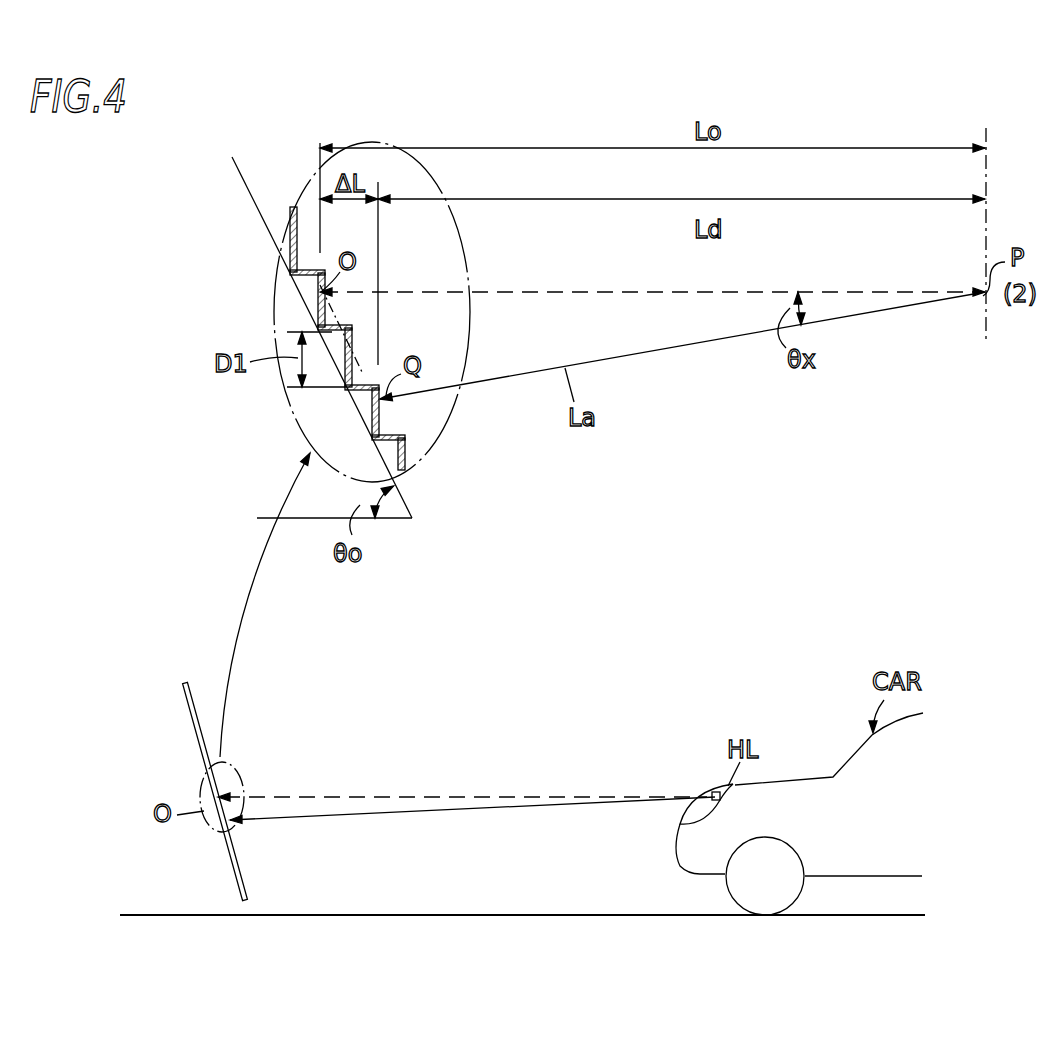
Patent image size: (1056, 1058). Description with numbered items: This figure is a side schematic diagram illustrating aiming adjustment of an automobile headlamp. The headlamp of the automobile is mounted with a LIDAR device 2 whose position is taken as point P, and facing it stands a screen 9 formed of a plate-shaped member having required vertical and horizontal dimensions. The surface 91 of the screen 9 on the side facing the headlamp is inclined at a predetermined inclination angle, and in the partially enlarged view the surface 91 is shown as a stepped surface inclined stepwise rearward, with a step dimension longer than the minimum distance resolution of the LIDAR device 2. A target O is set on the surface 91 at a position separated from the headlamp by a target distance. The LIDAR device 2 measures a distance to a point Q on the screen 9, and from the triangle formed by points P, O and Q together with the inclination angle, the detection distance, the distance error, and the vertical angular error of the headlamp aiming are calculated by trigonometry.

The screen 9 is at (292, 222).
The surface 91 is at (404, 455).
The LIDAR device 2 is at (712, 790).